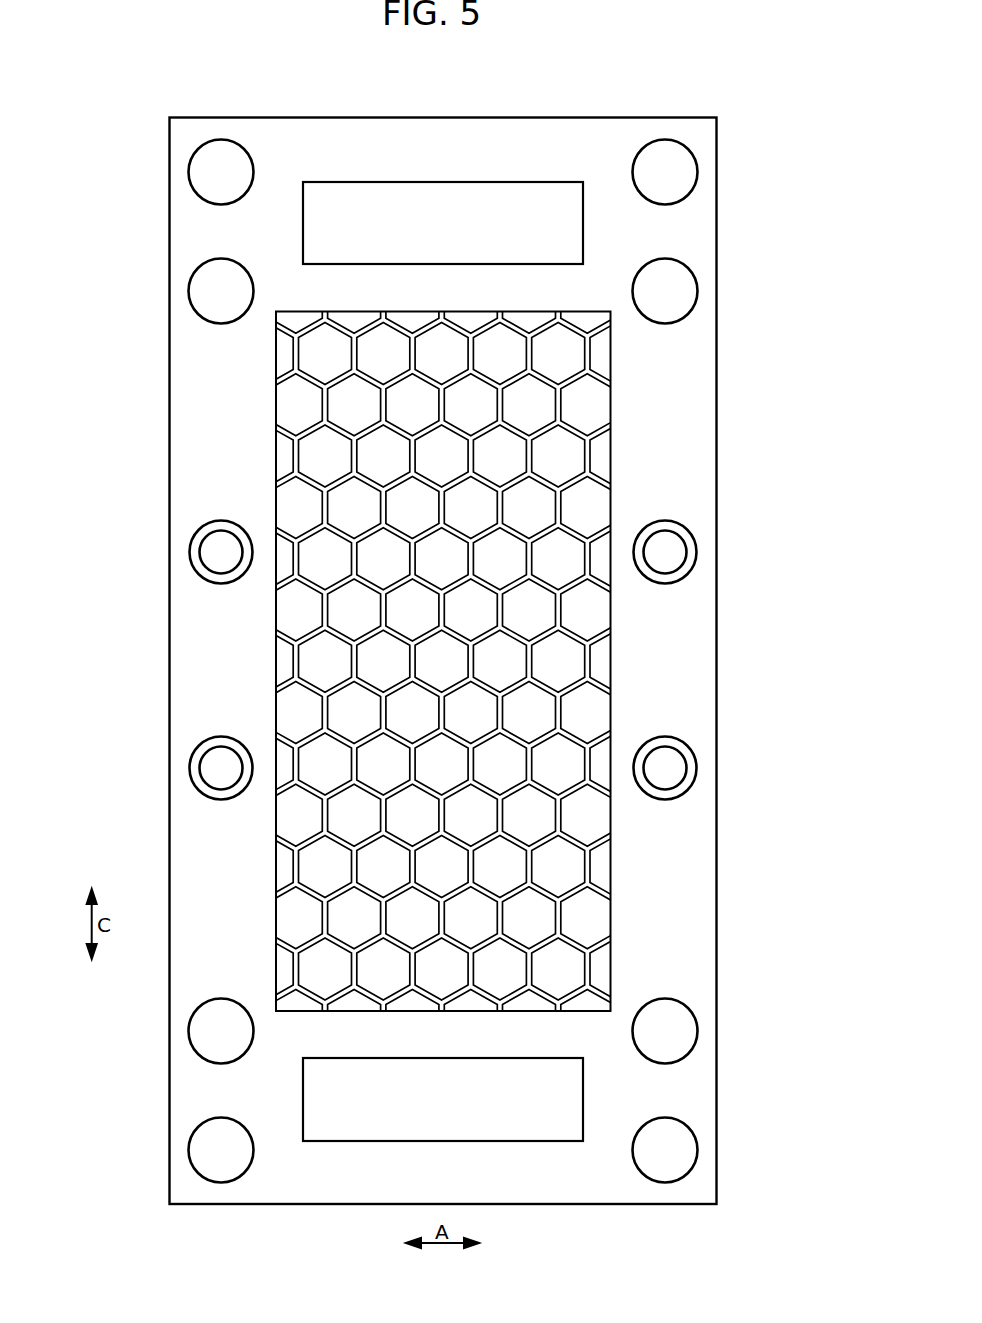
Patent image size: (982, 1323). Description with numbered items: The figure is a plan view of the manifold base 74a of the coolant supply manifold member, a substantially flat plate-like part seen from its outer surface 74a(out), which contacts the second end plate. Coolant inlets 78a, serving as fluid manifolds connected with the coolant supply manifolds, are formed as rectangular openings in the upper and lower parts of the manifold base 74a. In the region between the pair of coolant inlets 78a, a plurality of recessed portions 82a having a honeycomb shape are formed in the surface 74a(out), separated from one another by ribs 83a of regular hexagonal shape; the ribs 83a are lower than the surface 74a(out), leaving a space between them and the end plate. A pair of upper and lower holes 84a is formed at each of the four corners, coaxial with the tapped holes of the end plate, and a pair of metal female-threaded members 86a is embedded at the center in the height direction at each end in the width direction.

The manifold base 74a is at (698, 68).
The coolant inlet 78a is at (492, 207).
The recessed portion 82a is at (538, 412).
The rib 83a is at (532, 452).
The hole 84a is at (210, 173).
The metal female-threaded member 86a is at (210, 552).